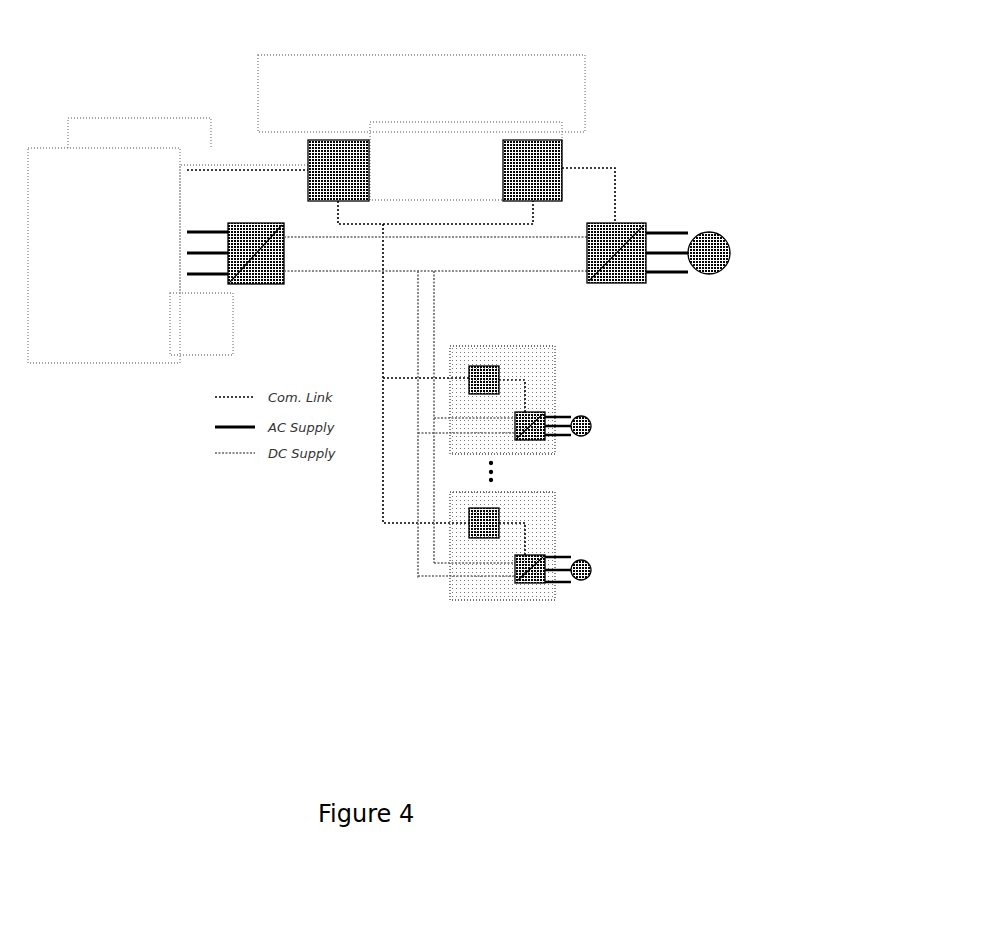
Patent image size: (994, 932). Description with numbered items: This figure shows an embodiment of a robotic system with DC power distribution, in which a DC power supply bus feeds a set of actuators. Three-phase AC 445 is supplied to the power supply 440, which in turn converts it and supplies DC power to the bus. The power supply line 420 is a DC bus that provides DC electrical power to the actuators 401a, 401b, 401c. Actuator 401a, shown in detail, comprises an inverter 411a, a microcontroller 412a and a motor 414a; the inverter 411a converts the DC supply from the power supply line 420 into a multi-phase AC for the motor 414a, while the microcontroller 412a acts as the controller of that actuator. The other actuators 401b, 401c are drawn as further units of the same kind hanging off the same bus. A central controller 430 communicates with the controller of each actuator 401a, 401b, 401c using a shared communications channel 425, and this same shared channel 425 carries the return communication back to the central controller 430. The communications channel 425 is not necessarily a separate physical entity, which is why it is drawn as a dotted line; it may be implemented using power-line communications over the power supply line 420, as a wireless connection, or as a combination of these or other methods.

The actuator 401a is at (722, 224).
The actuator 401b is at (578, 379).
The actuator 401c is at (577, 534).
The inverter 411a is at (645, 283).
The microcontroller 412a is at (535, 142).
The motor 414a is at (725, 270).
The power supply line 420 is at (420, 236).
The communications channel 425 is at (392, 220).
The central controller 430 is at (335, 138).
The power supply 440 is at (242, 284).
The three-phase AC 445 is at (167, 254).